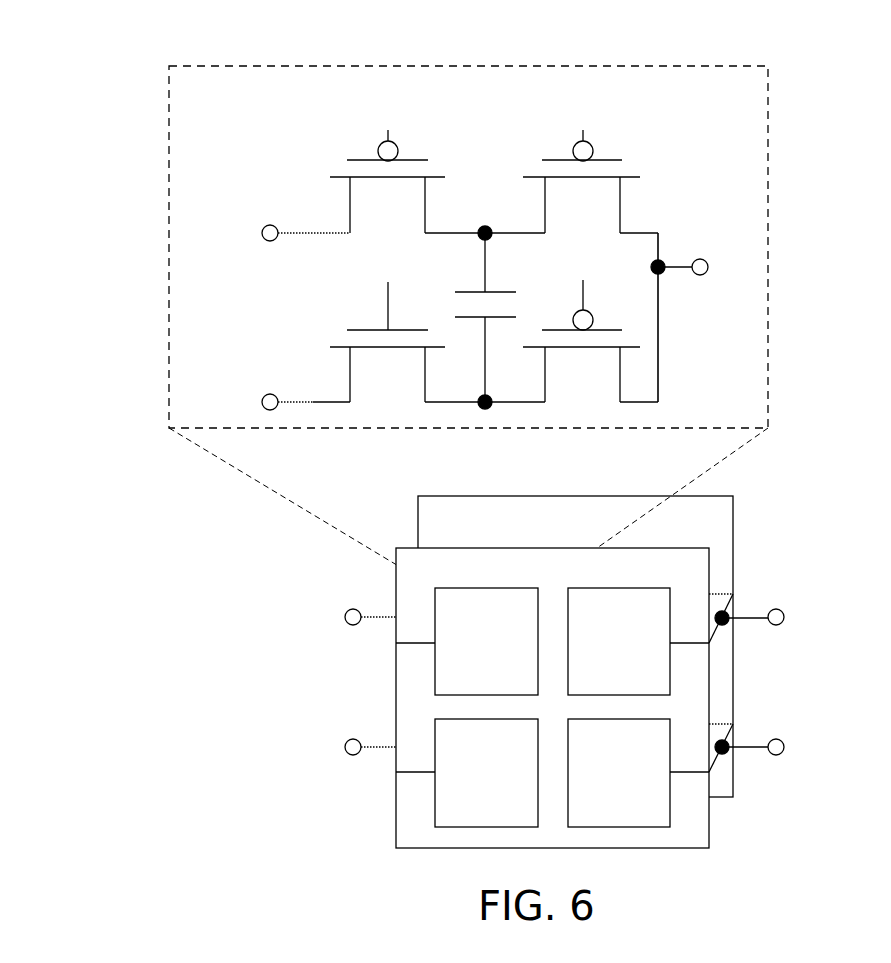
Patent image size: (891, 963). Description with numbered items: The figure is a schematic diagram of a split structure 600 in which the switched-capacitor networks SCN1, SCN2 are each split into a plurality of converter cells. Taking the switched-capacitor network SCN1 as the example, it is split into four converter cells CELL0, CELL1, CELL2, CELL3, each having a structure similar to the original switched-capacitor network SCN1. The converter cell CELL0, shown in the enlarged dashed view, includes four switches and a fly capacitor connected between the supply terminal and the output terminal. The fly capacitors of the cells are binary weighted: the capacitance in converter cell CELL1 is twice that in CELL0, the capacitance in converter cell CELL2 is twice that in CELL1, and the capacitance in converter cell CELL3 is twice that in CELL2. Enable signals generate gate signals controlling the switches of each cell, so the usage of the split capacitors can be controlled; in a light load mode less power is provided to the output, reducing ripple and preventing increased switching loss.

The split structure 600 is at (128, 33).
The switched-capacitor network SCN1 is at (700, 577).
The switched-capacitor network SCN2 is at (722, 525).
The converter cell CELL0 is at (517, 640).
The converter cell CELL1 is at (650, 640).
The converter cell CELL2 is at (517, 770).
The converter cell CELL3 is at (650, 770).